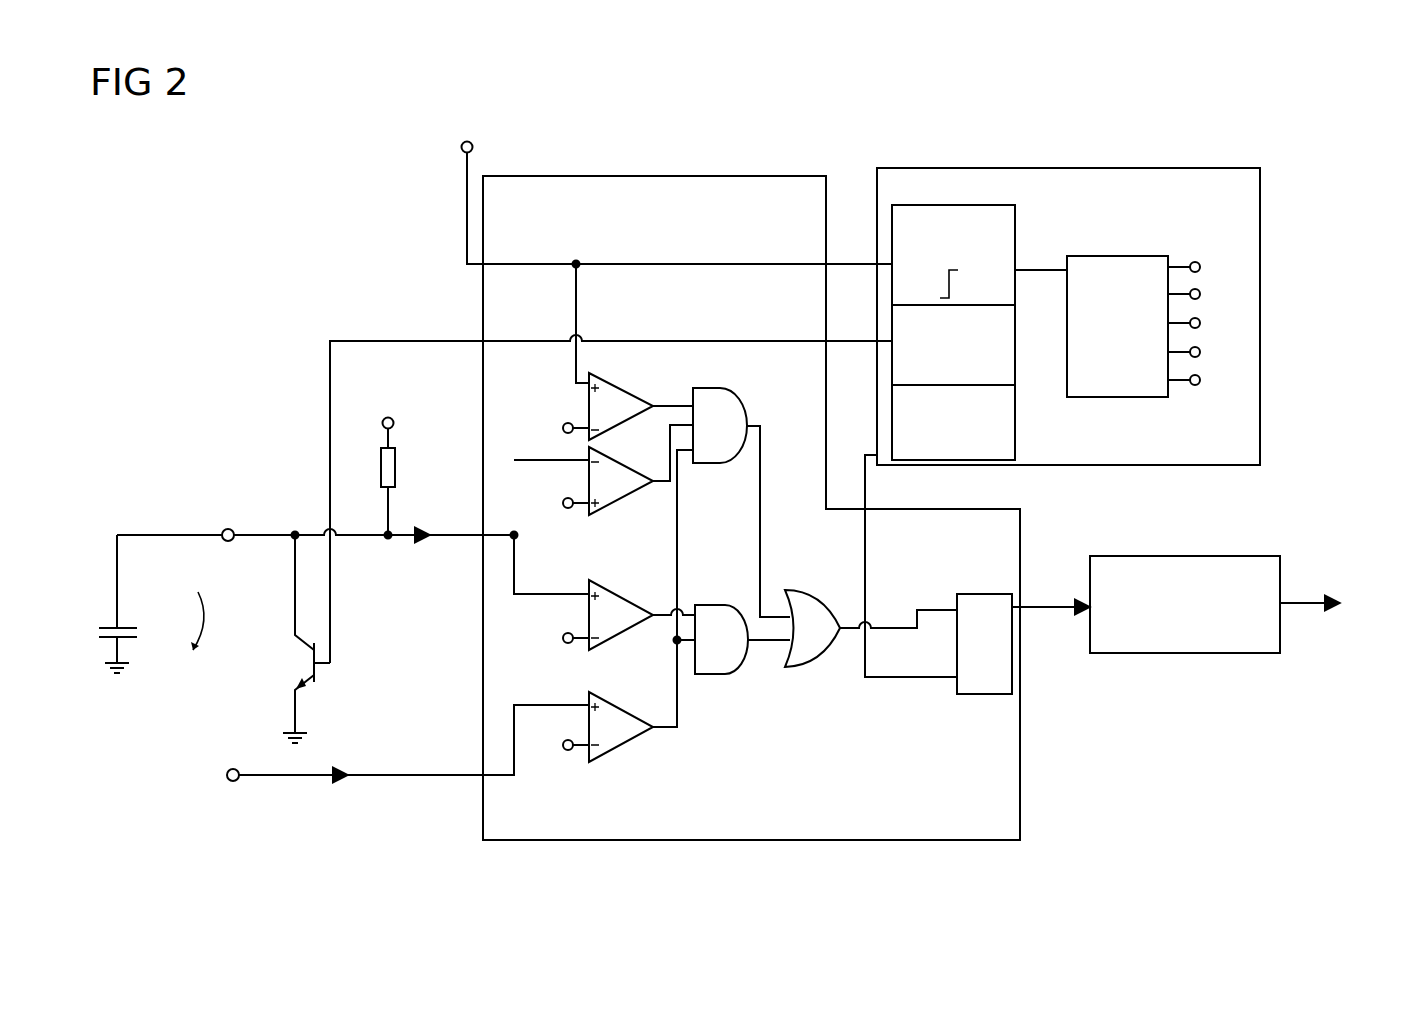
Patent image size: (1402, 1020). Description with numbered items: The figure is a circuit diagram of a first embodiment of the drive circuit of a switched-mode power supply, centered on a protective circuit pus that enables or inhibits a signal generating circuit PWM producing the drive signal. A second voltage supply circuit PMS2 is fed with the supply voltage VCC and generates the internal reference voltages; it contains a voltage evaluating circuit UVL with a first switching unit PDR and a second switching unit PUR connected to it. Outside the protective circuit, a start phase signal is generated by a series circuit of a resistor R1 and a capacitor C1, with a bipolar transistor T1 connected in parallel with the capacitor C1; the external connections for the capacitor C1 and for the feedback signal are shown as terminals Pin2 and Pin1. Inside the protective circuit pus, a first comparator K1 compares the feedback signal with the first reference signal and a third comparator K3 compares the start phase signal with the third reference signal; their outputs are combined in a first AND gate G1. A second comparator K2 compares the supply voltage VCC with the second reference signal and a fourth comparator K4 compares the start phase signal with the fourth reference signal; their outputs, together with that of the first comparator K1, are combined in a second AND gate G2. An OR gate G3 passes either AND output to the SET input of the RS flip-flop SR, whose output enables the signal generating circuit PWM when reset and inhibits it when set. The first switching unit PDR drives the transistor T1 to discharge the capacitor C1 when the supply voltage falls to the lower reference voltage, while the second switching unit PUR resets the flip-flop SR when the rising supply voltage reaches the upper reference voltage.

The supply voltage VCC is at (666, 249).
The protective circuit pus is at (751, 508).
The pin 2 terminal Pin2 is at (317, 536).
The pin 1 terminal Pin1 is at (377, 759).
The capacitor C1 is at (177, 604).
The bipolar transistor T1 is at (302, 639).
The resistor R1 is at (396, 462).
The first comparator K1 is at (606, 606).
The second comparator K2 is at (606, 407).
The third comparator K3 is at (607, 615).
The fourth comparator K4 is at (603, 470).
The first AND gate G1 is at (733, 639).
The second AND gate G2 is at (741, 502).
The OR gate G3 is at (871, 628).
The RS flip-flop SR is at (1006, 667).
The second voltage supply circuit PMS2 is at (1068, 316).
The voltage evaluating circuit UVL is at (953, 256).
The first switching unit PDR is at (953, 345).
The second switching unit PUR is at (953, 422).
The signal generating circuit PWM is at (1230, 604).